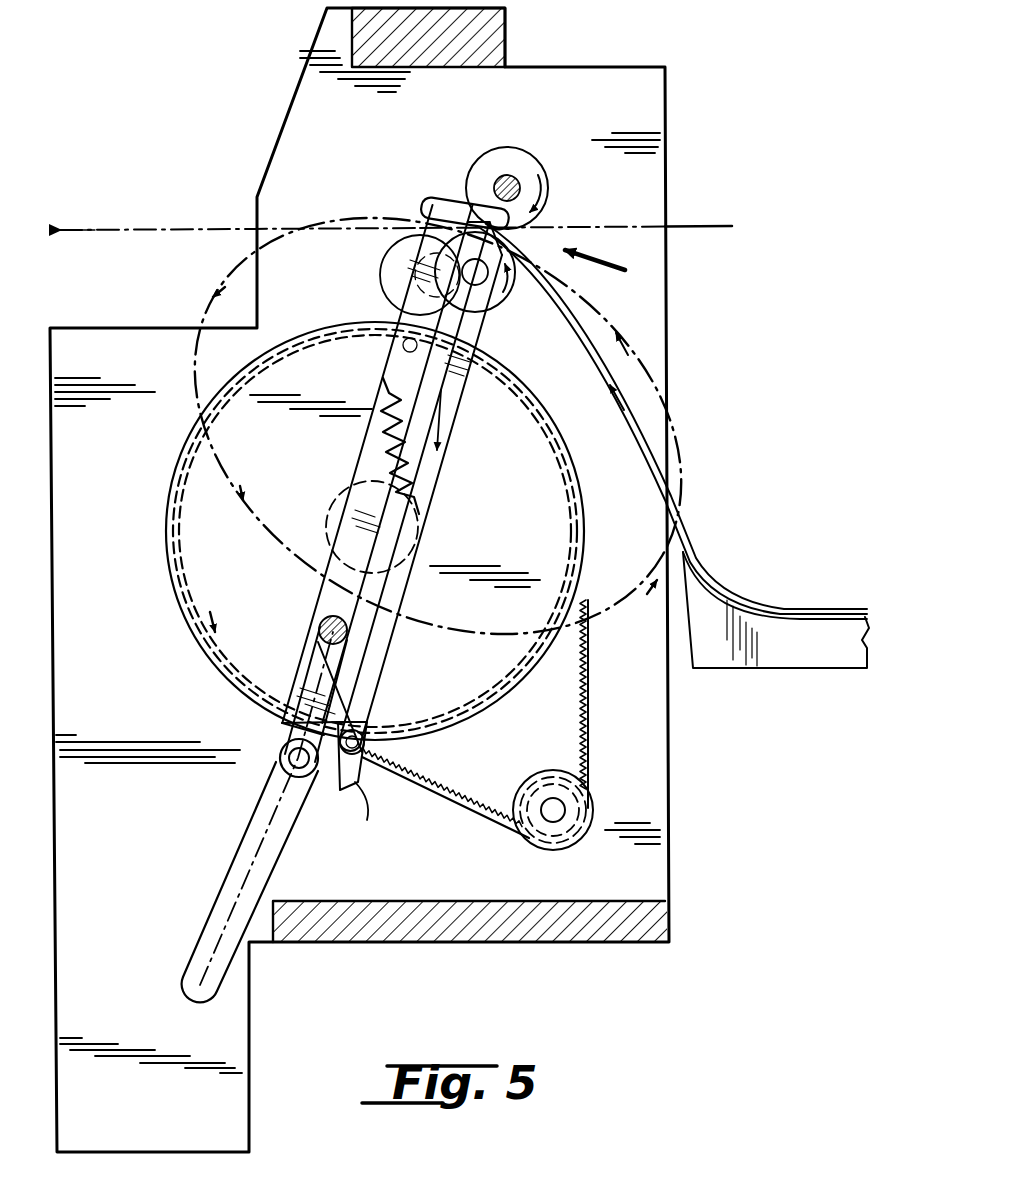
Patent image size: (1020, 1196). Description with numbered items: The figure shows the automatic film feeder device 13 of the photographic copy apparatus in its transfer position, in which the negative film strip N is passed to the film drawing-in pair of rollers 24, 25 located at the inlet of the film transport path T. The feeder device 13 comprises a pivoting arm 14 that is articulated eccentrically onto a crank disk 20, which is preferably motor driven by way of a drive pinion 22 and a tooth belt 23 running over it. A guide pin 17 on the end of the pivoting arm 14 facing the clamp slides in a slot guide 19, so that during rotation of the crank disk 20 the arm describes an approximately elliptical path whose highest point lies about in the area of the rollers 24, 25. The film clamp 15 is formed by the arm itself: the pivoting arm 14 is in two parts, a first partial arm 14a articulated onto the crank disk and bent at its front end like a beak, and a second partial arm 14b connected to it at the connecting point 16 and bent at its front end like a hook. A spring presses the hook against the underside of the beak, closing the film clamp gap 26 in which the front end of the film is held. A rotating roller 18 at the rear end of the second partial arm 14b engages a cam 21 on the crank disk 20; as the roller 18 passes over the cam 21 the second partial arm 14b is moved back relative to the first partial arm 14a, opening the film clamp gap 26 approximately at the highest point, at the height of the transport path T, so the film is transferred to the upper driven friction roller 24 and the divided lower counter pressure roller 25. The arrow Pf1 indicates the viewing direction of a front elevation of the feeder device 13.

The film feeder device 13 is at (692, 814).
The pivoting arm 14 is at (399, 478).
The first partial arm 14a is at (384, 375).
The second partial arm 14b is at (437, 478).
The film clamp 15 is at (446, 182).
The connecting point 16 is at (353, 757).
The guide pin 17 is at (321, 621).
The rotating roller 18 is at (280, 762).
The slot guide 19 is at (222, 882).
The crank disk 20 is at (560, 512).
The cam 21 is at (283, 742).
The drive pinion 22 is at (553, 826).
The rack 23 is at (468, 812).
The upper driven friction roller 24 is at (508, 158).
The lower counter pressure roller 25 is at (502, 308).
The film clamp gap 26 is at (440, 247).
The film transport path T is at (186, 224).
The negative film strip N is at (583, 322).
The arrow Pf1 is at (592, 250).